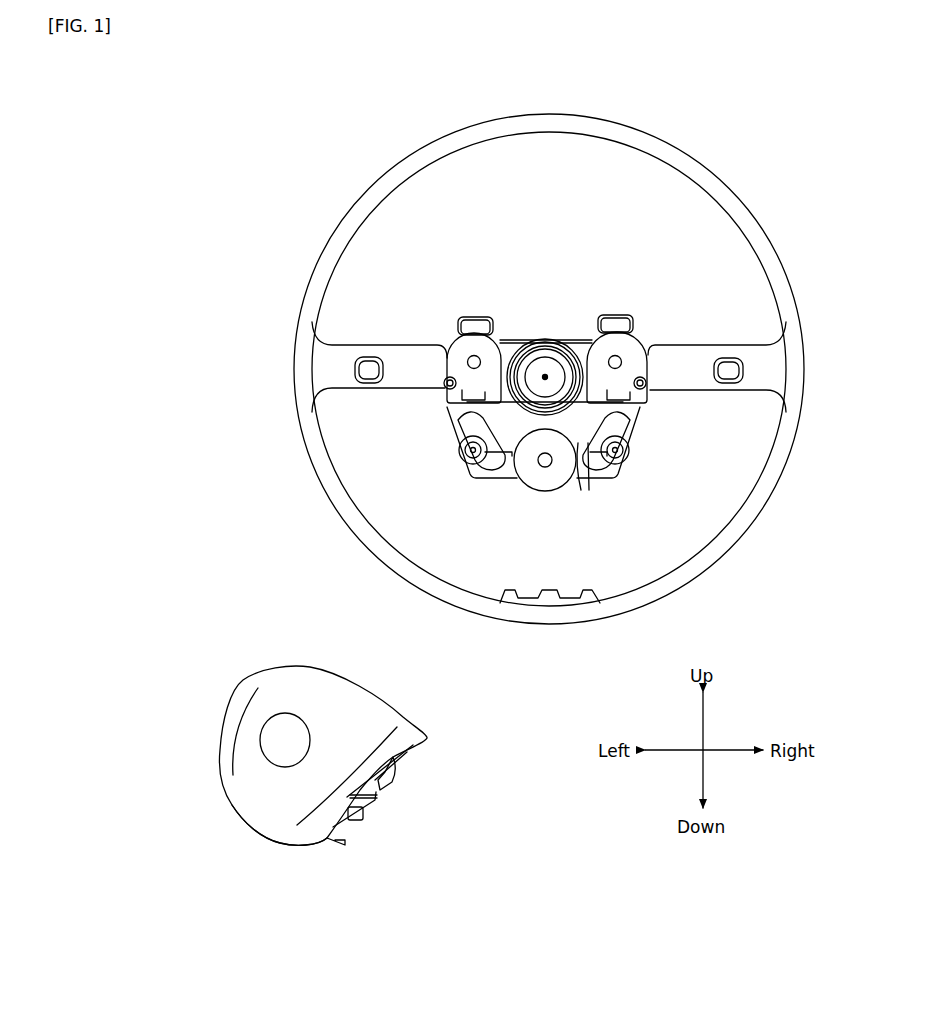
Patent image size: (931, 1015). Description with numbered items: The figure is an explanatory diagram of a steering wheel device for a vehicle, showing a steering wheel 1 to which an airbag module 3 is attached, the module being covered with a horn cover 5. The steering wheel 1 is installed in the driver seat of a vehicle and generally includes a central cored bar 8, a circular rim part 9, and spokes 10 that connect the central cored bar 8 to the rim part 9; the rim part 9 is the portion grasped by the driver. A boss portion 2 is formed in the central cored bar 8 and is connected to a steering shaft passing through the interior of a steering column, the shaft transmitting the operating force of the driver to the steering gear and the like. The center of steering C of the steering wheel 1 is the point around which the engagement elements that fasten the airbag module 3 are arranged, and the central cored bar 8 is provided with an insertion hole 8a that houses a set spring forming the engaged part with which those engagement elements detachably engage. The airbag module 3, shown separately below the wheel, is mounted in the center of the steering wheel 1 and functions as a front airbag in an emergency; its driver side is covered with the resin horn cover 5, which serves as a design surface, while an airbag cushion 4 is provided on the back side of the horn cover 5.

The steering wheel 1 is at (742, 170).
The boss portion 2 is at (573, 348).
The airbag module 3 is at (210, 722).
The airbag cushion 4 is at (388, 772).
The horn cover 5 is at (258, 830).
The central cored bar 8 is at (448, 470).
The insertion hole 8a is at (474, 356).
The rim part 9 is at (303, 297).
The spokes 10 is at (400, 360).
The center of steering C is at (545, 375).